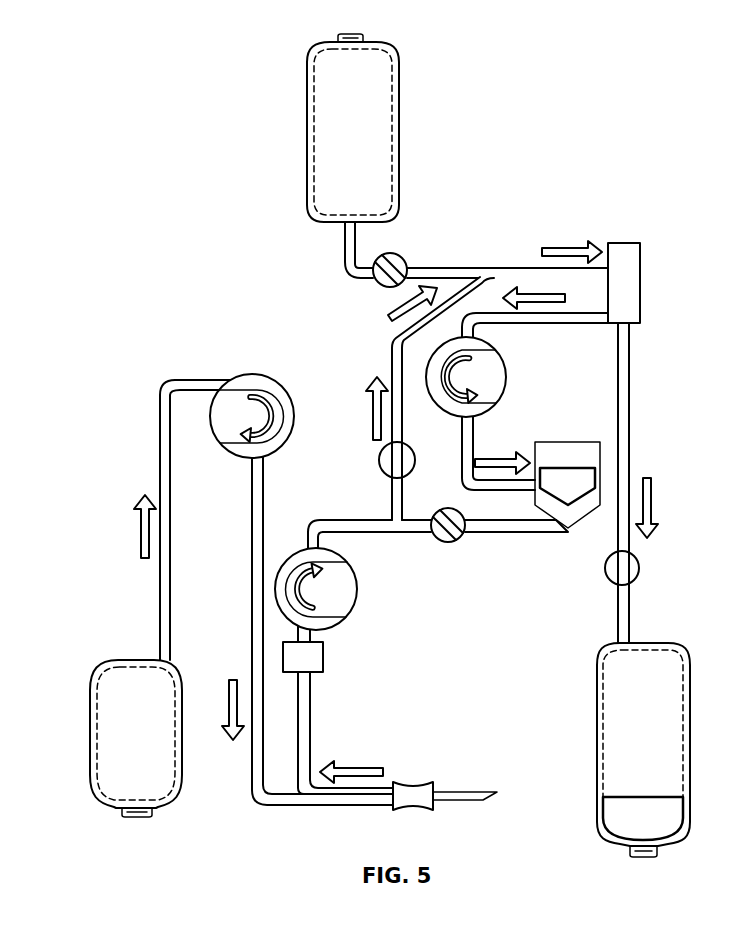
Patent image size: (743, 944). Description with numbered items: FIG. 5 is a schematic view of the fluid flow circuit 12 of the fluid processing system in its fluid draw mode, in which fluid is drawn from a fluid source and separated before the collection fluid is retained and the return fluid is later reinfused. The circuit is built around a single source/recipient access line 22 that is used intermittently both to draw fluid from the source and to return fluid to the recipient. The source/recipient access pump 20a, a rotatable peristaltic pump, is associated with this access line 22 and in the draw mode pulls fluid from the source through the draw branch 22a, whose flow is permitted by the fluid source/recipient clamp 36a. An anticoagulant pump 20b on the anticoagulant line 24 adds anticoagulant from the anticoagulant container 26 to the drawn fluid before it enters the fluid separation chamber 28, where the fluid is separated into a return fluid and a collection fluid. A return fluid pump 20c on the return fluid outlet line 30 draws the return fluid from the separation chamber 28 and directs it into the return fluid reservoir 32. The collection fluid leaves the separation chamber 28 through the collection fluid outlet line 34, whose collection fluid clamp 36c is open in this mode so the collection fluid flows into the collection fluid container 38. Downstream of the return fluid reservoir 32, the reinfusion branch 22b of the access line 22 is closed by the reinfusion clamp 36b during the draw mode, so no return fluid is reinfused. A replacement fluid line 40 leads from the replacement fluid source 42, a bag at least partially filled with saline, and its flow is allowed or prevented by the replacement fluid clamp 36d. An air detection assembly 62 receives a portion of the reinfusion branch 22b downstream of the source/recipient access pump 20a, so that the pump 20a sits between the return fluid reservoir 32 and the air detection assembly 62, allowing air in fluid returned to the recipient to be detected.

The fluid flow circuit 12 is at (265, 252).
The source/recipient access pump 20a is at (338, 590).
The anticoagulant pump 20b is at (253, 376).
The return fluid pump 20c is at (513, 375).
The source/recipient access line 22 is at (315, 697).
The draw branch 22a is at (393, 343).
The reinfusion branch 22b is at (510, 533).
The anticoagulant line 24 is at (160, 417).
The anticoagulant container 26 is at (151, 745).
The fluid separation chamber 28 is at (641, 278).
The return fluid outlet line 30 is at (480, 432).
The return fluid reservoir 32 is at (605, 463).
The collection fluid outlet line 34 is at (630, 608).
The fluid source/recipient clamp 36a is at (374, 462).
The reinfusion clamp 36b is at (465, 545).
The collection fluid clamp 36c is at (607, 580).
The replacement fluid clamp 36d is at (404, 254).
The collection fluid container 38 is at (654, 729).
The replacement fluid line 40 is at (345, 255).
The replacement fluid source 42 is at (364, 137).
The air detection assembly 62 is at (325, 657).